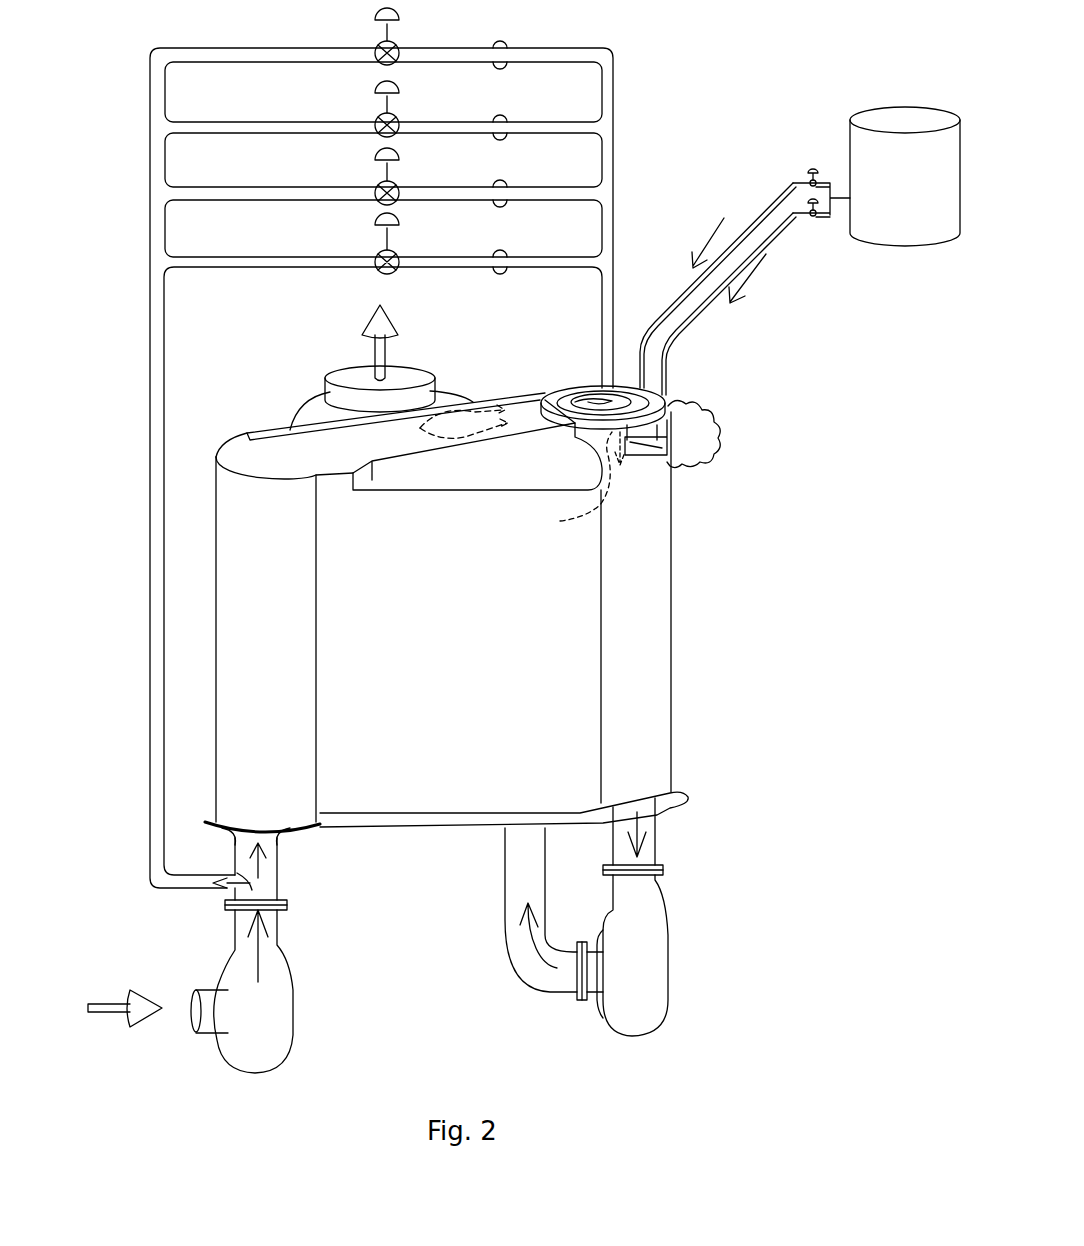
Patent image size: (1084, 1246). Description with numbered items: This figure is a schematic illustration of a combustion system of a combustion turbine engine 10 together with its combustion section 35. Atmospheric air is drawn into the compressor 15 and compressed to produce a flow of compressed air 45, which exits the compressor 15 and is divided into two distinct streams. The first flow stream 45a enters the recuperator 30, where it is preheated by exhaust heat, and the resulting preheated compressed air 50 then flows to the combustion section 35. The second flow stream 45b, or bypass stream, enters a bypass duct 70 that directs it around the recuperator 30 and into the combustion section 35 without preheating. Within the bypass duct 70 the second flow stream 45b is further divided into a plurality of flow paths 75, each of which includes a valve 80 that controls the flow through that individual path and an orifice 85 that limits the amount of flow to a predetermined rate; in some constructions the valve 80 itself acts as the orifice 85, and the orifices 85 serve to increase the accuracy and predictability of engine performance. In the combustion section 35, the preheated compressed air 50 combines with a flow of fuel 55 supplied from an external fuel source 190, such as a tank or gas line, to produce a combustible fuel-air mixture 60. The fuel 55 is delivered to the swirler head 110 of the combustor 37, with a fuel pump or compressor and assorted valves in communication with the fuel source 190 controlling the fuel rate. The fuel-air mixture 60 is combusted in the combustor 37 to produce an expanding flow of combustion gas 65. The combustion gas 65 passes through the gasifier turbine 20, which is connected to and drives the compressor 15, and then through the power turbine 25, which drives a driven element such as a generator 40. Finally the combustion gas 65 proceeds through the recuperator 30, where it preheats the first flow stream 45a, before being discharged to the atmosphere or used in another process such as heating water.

The combustion turbine engine 10 is at (701, 105).
The compressor 15 is at (255, 1021).
The gasifier turbine 20 is at (662, 918).
The power turbine 25 is at (662, 918).
The recuperator 30 is at (459, 639).
The combustion section 35 is at (655, 573).
The combustor 37 is at (690, 462).
The generator 40 is at (633, 1008).
The flow of compressed air 45 is at (266, 879).
The first flow stream 45a is at (263, 877).
The second flow stream 45b is at (237, 870).
The preheated compressed air 50 is at (428, 435).
The flow of fuel 55 is at (735, 208).
The fuel-air mixture 60 is at (575, 485).
The flow of combustion gas 65 is at (380, 348).
The bypass duct 70 is at (157, 687).
The flow paths 75 is at (293, 62).
The valve 80 is at (393, 65).
The orifice 85 is at (495, 63).
The swirler head 110 is at (581, 393).
The fuel source 190 is at (887, 116).